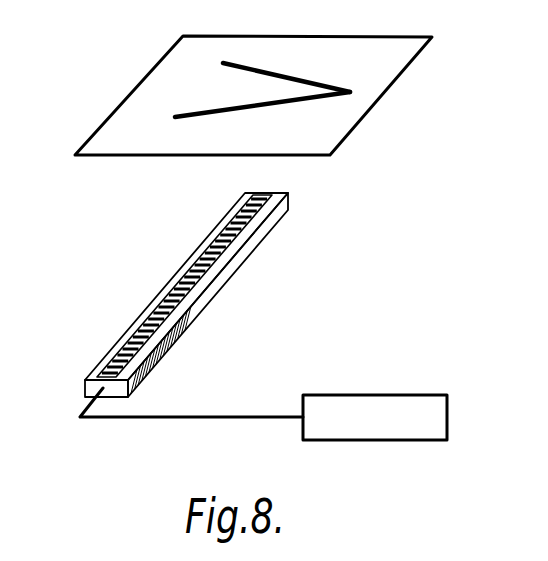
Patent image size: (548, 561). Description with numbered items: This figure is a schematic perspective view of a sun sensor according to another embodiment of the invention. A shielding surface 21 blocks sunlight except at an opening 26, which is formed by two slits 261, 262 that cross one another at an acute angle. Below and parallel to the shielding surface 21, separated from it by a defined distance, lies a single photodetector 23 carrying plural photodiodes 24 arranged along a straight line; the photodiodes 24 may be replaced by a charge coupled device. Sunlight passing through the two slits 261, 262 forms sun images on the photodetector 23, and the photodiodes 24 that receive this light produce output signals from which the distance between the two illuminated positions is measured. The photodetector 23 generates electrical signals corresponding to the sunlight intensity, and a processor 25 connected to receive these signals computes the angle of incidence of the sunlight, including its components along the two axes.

The shielding surface 21 is at (377, 48).
The opening 26 is at (303, 61).
The slit 261 is at (240, 65).
The slit 262 is at (287, 98).
The photodetector 23 is at (186, 295).
The photodiodes 24 is at (132, 342).
The processor 25 is at (347, 397).